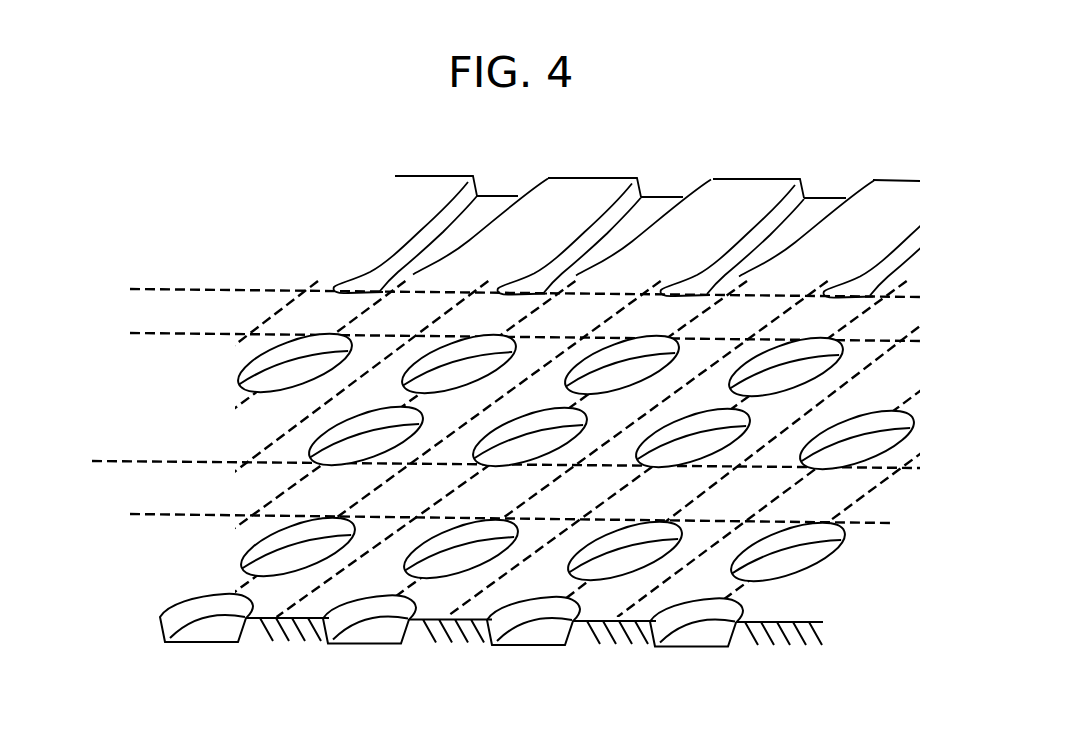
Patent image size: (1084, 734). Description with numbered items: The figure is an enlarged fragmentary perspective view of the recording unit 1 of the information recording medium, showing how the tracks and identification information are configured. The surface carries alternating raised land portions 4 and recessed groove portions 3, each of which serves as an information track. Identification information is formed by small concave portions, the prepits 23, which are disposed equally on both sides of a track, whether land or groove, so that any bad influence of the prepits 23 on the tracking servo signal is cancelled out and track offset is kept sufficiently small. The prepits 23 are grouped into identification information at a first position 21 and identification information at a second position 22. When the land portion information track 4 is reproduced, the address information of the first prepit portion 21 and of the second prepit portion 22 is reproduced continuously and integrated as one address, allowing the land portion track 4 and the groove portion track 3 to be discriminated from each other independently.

The recording unit 1 is at (385, 183).
The groove portion 3 is at (513, 195).
The land portion 4 is at (586, 182).
The identification information disposed at a first position 21 is at (235, 346).
The identification information disposed at a second position 22 is at (189, 519).
The prepit 23 is at (465, 525).